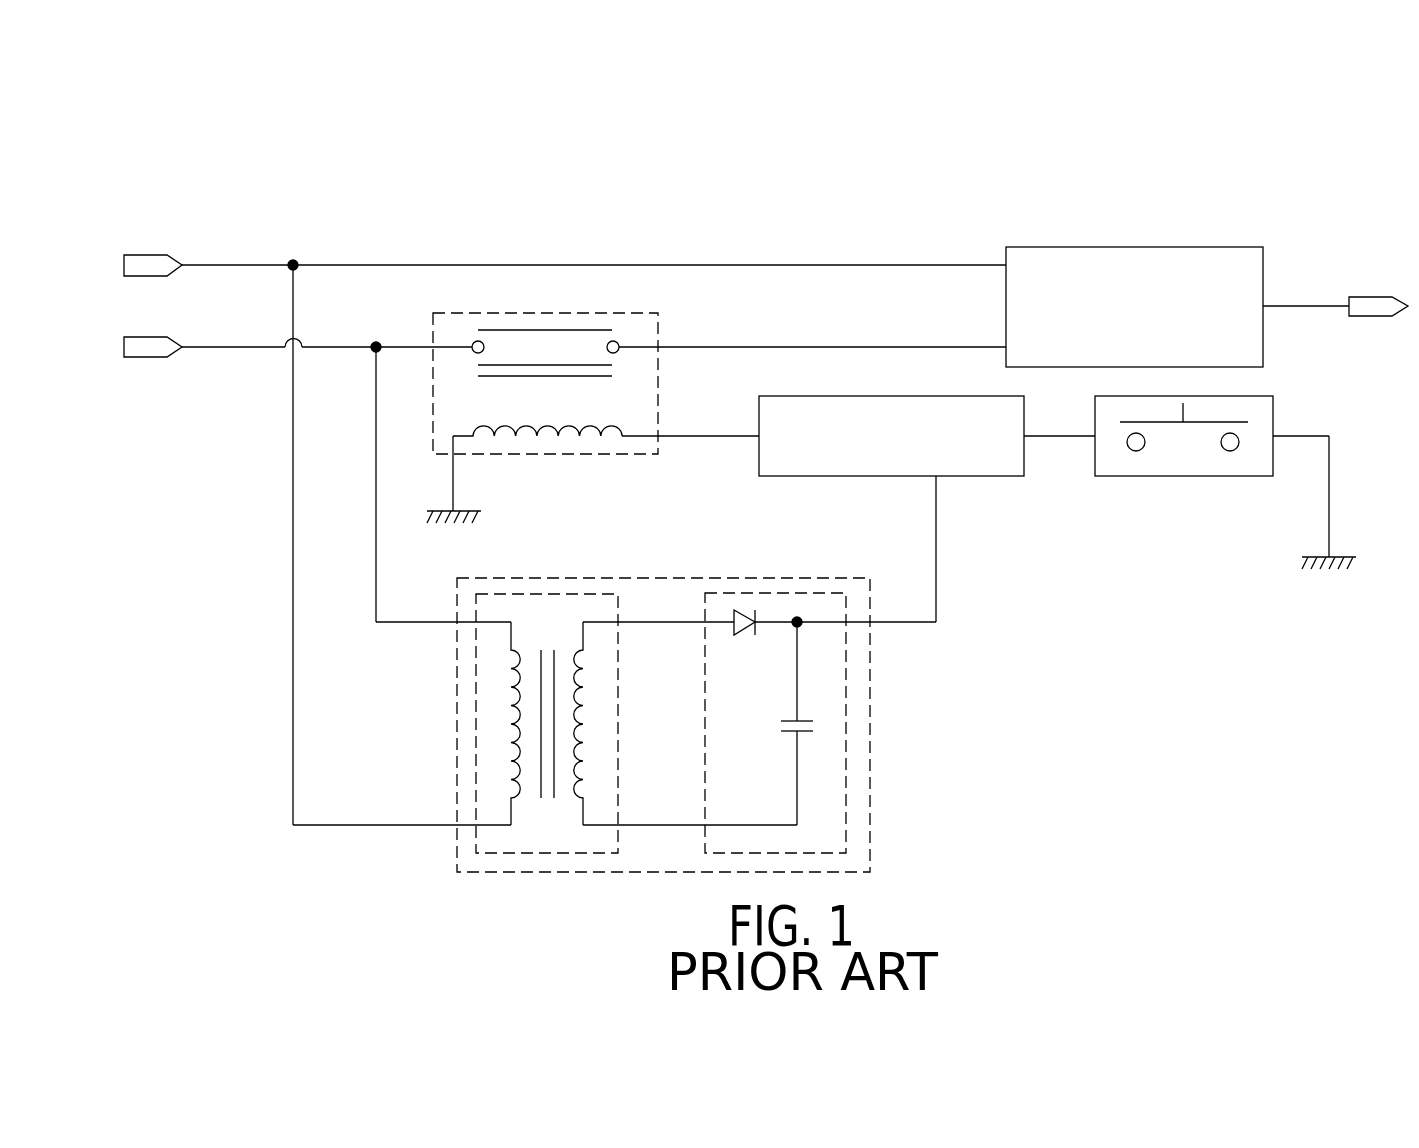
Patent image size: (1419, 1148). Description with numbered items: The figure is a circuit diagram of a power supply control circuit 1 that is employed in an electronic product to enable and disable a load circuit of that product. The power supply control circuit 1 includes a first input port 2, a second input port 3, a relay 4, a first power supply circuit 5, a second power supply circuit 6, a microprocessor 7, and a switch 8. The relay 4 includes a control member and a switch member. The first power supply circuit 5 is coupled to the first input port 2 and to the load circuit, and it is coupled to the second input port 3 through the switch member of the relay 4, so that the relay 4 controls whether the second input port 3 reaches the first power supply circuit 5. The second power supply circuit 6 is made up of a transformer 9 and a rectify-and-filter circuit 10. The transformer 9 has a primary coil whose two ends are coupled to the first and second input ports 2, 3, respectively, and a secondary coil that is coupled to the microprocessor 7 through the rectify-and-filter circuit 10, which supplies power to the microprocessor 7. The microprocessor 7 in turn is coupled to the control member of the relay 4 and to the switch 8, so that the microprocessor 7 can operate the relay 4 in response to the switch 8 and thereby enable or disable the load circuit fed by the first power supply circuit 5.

The power supply control circuit 1 is at (650, 238).
The first input port 2 is at (231, 263).
The second input port 3 is at (231, 357).
The relay 4 is at (433, 330).
The first power supply circuit 5 is at (1143, 247).
The second power supply circuit 6 is at (870, 694).
The microprocessor 7 is at (988, 478).
The switch 8 is at (1196, 478).
The transformer 9 is at (476, 732).
The rectify-and-filter circuit 10 is at (846, 760).